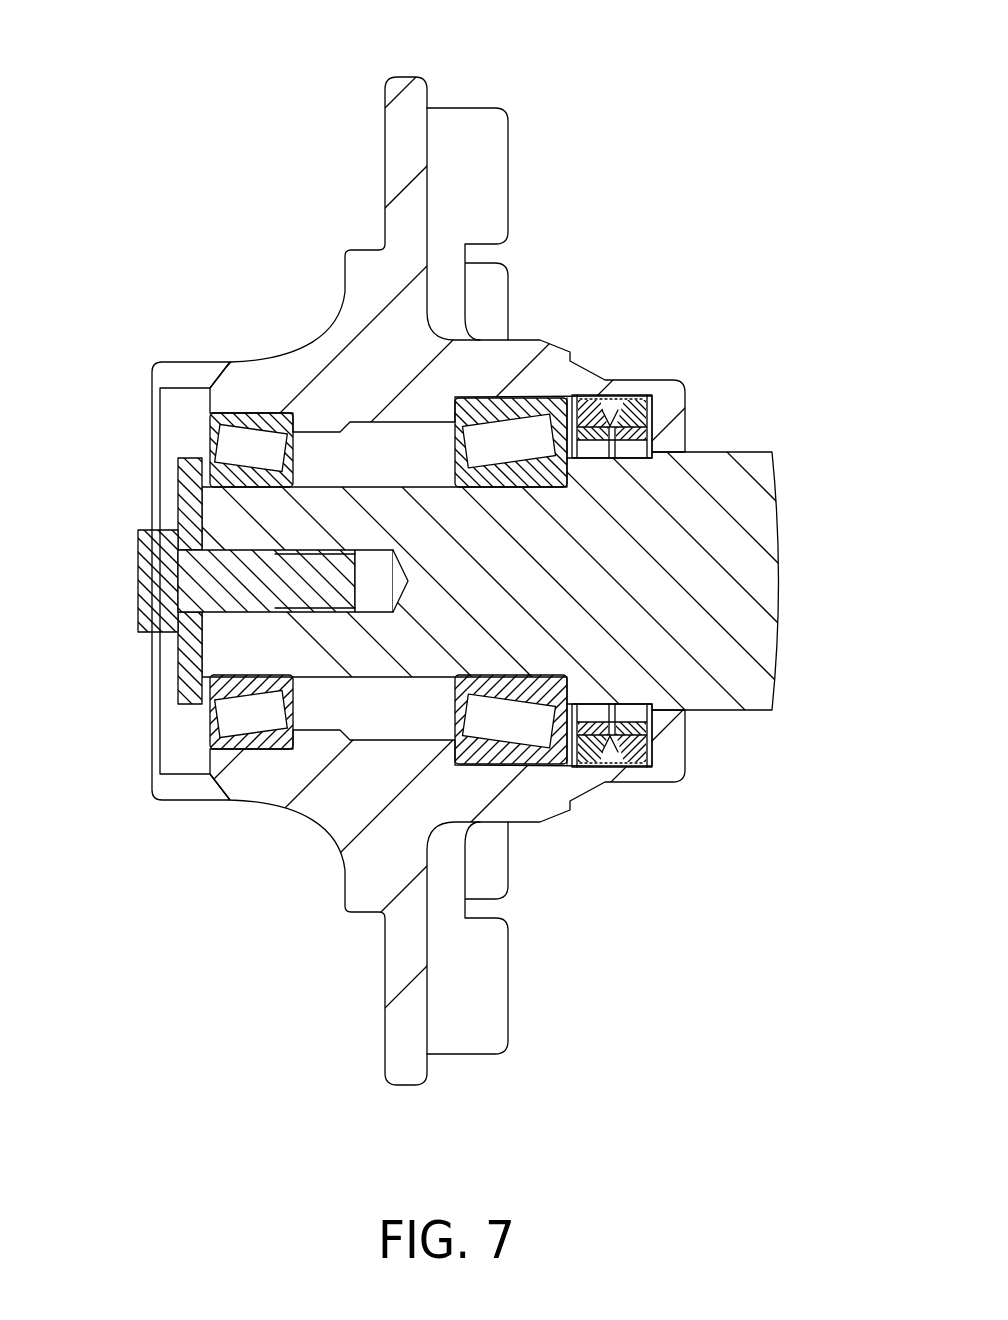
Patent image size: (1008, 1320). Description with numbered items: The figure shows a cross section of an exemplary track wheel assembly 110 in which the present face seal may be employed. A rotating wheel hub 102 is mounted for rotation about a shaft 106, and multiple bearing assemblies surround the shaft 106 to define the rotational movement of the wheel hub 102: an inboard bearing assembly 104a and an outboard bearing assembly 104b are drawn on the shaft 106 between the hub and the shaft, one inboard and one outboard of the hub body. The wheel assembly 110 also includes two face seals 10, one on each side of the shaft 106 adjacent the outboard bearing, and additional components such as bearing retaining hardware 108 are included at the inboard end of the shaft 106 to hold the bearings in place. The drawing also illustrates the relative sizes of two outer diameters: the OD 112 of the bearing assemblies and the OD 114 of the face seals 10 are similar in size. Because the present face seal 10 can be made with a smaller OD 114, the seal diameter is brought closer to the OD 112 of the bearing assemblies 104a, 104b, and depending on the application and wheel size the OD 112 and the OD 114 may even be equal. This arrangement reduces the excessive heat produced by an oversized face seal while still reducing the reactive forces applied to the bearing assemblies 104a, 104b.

The wheel assembly 110 is at (190, 80).
The wheel hub 102 is at (350, 320).
The inboard bearing assembly 104a is at (537, 453).
The outboard bearing assembly 104b is at (278, 460).
The shaft 106 is at (740, 666).
The bearing retaining hardware 108 is at (140, 608).
The face seal 10 is at (609, 412).
The OD of the bearing assemblies 112 is at (522, 775).
The OD of the face seals 114 is at (600, 779).